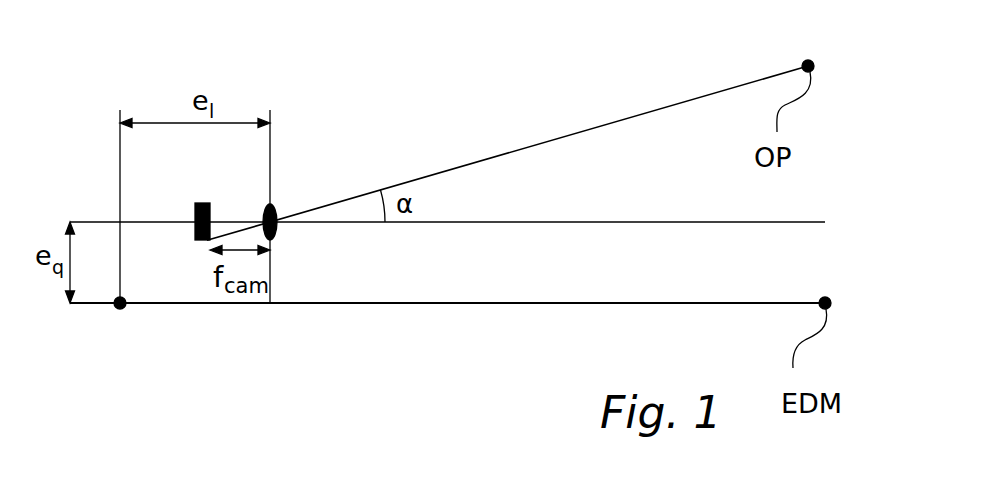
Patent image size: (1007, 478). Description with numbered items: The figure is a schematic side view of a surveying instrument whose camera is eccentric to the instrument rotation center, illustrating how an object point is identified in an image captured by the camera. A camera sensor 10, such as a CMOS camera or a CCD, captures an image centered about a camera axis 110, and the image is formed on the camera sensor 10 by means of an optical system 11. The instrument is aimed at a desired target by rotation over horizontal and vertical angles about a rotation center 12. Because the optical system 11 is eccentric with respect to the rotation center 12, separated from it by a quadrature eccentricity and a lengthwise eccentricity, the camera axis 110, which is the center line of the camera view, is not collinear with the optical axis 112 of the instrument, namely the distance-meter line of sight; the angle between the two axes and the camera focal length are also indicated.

The camera sensor 10 is at (200, 203).
The optical system 11 is at (272, 204).
The rotation center 12 is at (125, 306).
The camera axis 110 is at (437, 222).
The optical axis 112 is at (347, 304).